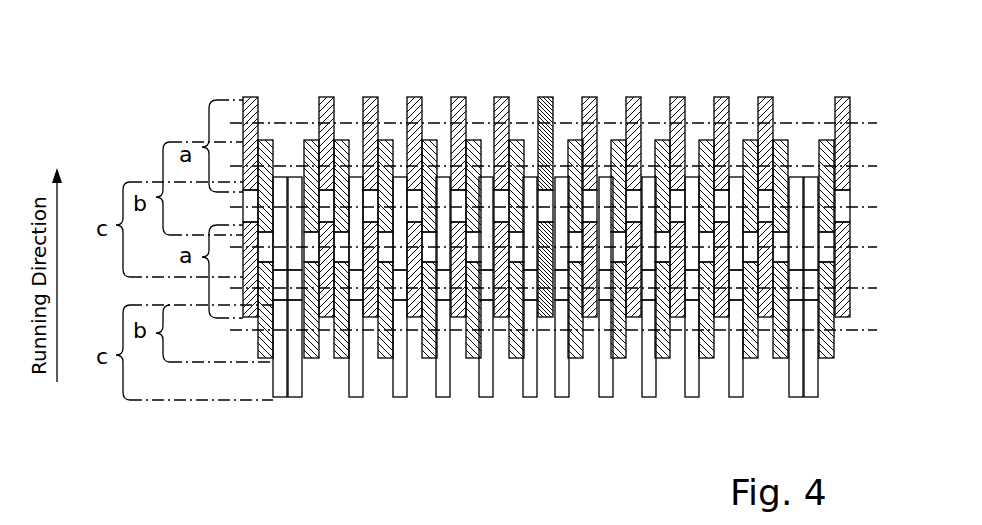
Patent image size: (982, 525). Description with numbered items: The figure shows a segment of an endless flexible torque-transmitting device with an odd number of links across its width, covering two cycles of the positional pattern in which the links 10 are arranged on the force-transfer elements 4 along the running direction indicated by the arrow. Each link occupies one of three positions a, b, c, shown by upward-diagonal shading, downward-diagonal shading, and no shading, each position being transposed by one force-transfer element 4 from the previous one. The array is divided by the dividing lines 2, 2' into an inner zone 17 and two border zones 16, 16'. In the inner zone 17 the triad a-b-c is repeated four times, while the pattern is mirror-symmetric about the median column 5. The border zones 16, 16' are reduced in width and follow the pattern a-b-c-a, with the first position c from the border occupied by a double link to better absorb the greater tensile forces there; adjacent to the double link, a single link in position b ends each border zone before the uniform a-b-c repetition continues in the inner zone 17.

The border zone 16 is at (262, 182).
The dividing line 2 is at (323, 177).
The links 10 is at (488, 150).
The force-transfer element 4 is at (566, 118).
The inner zone 17 is at (649, 91).
The dividing line 2' is at (770, 177).
The border zone 16' is at (840, 182).
The median column 5 is at (543, 366).